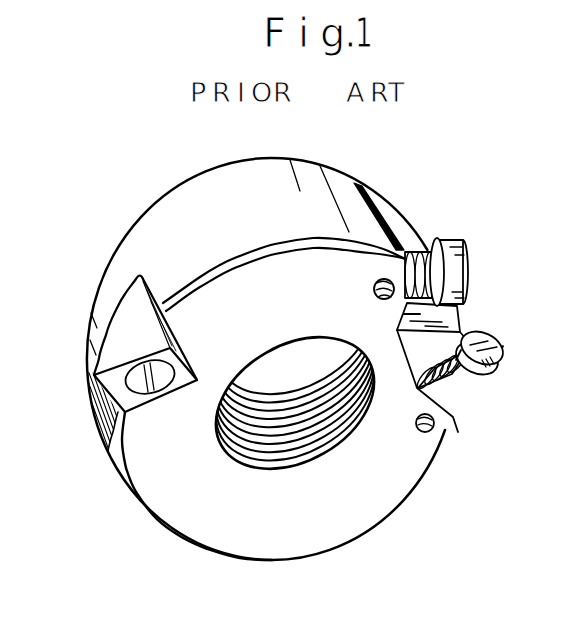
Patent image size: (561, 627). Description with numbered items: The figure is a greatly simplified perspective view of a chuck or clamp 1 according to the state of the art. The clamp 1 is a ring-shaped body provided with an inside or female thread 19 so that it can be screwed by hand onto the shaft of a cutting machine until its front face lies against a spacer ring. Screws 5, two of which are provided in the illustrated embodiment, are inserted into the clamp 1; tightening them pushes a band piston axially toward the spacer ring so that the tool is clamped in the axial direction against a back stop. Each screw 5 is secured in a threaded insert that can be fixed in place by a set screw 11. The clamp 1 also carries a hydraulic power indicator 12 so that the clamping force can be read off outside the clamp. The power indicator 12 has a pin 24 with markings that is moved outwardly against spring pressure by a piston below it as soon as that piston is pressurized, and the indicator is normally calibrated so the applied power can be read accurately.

The clamp 1 is at (136, 223).
The screws 5 is at (453, 240).
The set screw 11 is at (384, 300).
The hydraulic power indicator 12 is at (108, 401).
The inside thread 19 is at (246, 456).
The pin 24 is at (128, 378).